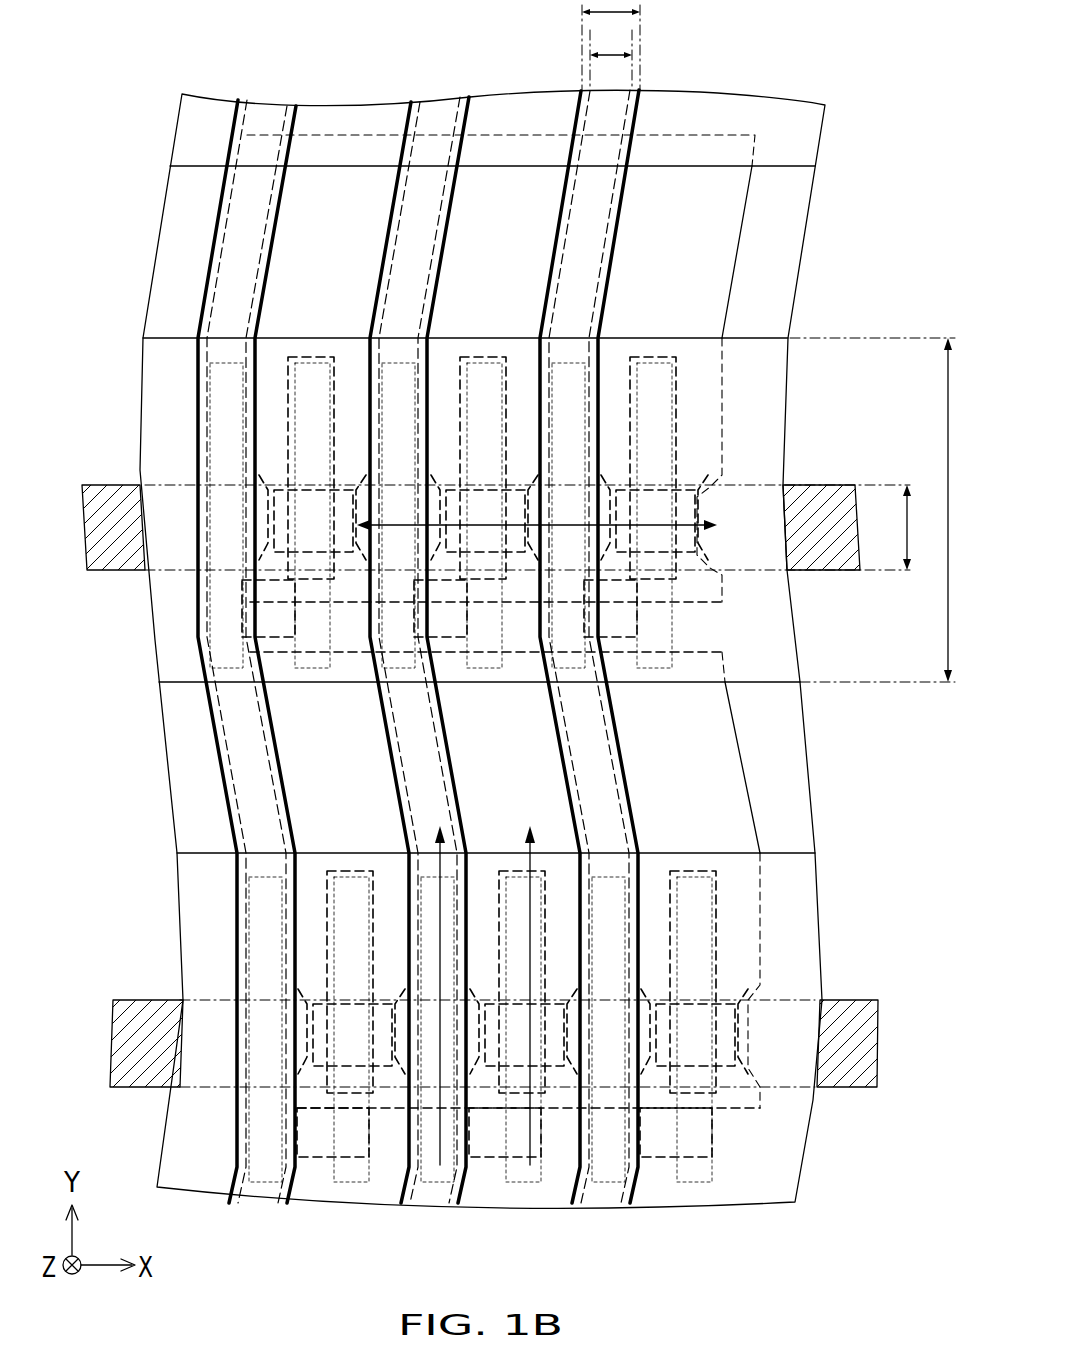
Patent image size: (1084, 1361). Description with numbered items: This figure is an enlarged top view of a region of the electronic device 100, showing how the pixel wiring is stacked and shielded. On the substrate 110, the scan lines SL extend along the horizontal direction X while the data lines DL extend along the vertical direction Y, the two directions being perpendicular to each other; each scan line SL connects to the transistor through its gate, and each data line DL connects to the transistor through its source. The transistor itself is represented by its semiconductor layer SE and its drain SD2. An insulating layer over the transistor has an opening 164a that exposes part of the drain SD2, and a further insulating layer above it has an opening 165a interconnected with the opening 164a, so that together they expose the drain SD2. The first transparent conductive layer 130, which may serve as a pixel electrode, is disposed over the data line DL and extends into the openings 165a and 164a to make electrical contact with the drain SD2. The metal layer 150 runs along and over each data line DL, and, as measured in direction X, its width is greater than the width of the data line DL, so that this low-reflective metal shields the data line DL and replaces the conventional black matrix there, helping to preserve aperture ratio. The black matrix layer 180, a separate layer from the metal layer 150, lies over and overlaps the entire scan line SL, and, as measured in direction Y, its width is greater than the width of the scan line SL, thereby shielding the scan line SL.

The electronic device 100 is at (524, 619).
The substrate 110 is at (793, 200).
The first transparent conductive layer 130 is at (740, 232).
The metal layer 150 is at (480, 118).
The black matrix layer 180 is at (763, 668).
The opening 165a is at (700, 1020).
The opening 164a is at (612, 774).
The data line DL is at (468, 98).
The scan line SL is at (810, 485).
The drain SD2 is at (678, 390).
The semiconductor layer SE is at (672, 622).